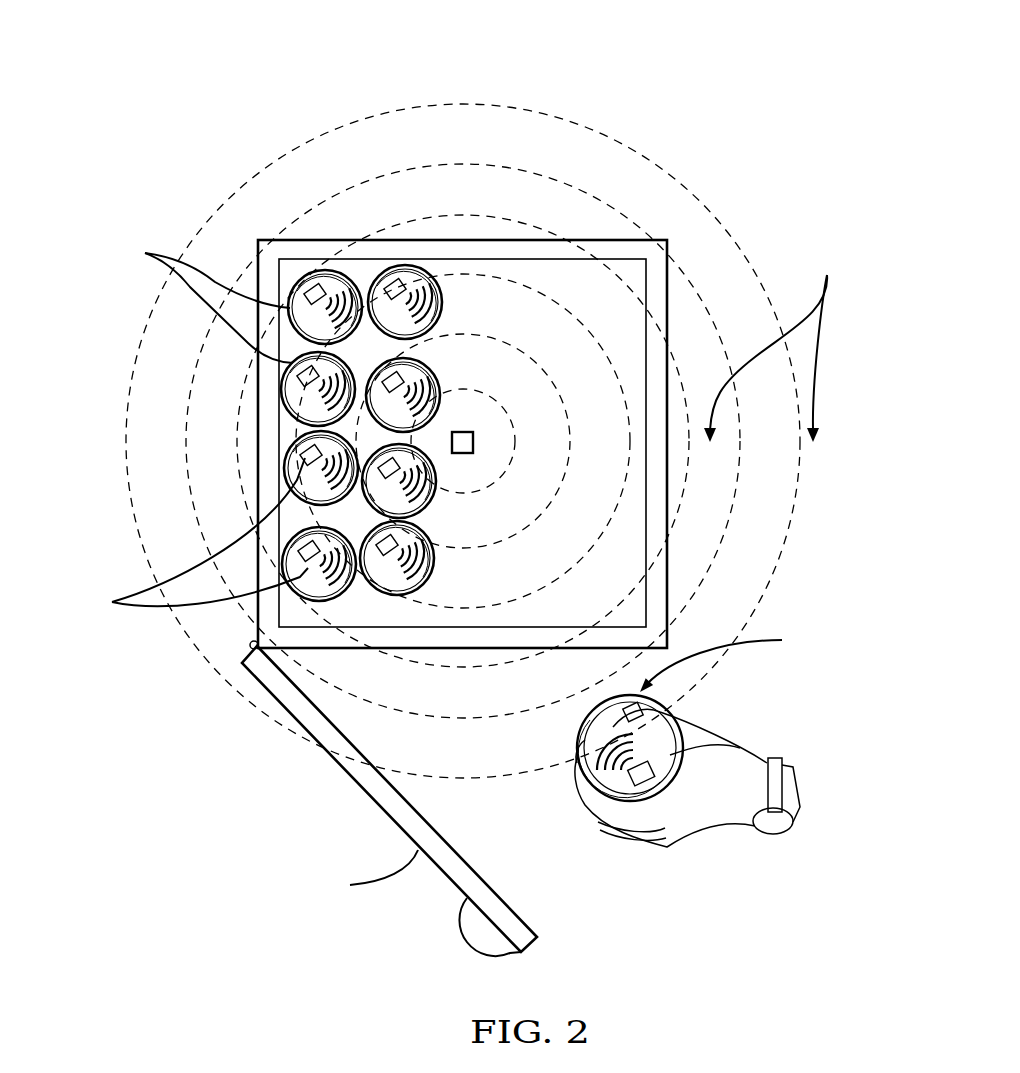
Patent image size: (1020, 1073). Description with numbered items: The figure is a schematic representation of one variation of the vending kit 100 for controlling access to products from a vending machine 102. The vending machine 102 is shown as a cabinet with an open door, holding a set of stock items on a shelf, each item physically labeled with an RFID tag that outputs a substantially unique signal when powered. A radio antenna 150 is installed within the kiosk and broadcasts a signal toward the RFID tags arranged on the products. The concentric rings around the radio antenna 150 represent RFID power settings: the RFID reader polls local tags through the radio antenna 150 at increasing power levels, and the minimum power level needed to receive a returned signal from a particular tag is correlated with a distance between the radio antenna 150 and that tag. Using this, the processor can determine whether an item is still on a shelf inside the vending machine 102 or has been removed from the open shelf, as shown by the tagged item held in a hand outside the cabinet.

The vending kit 100 is at (187, 68).
The vending machine 102 is at (257, 624).
The radio antenna 150 is at (473, 440).